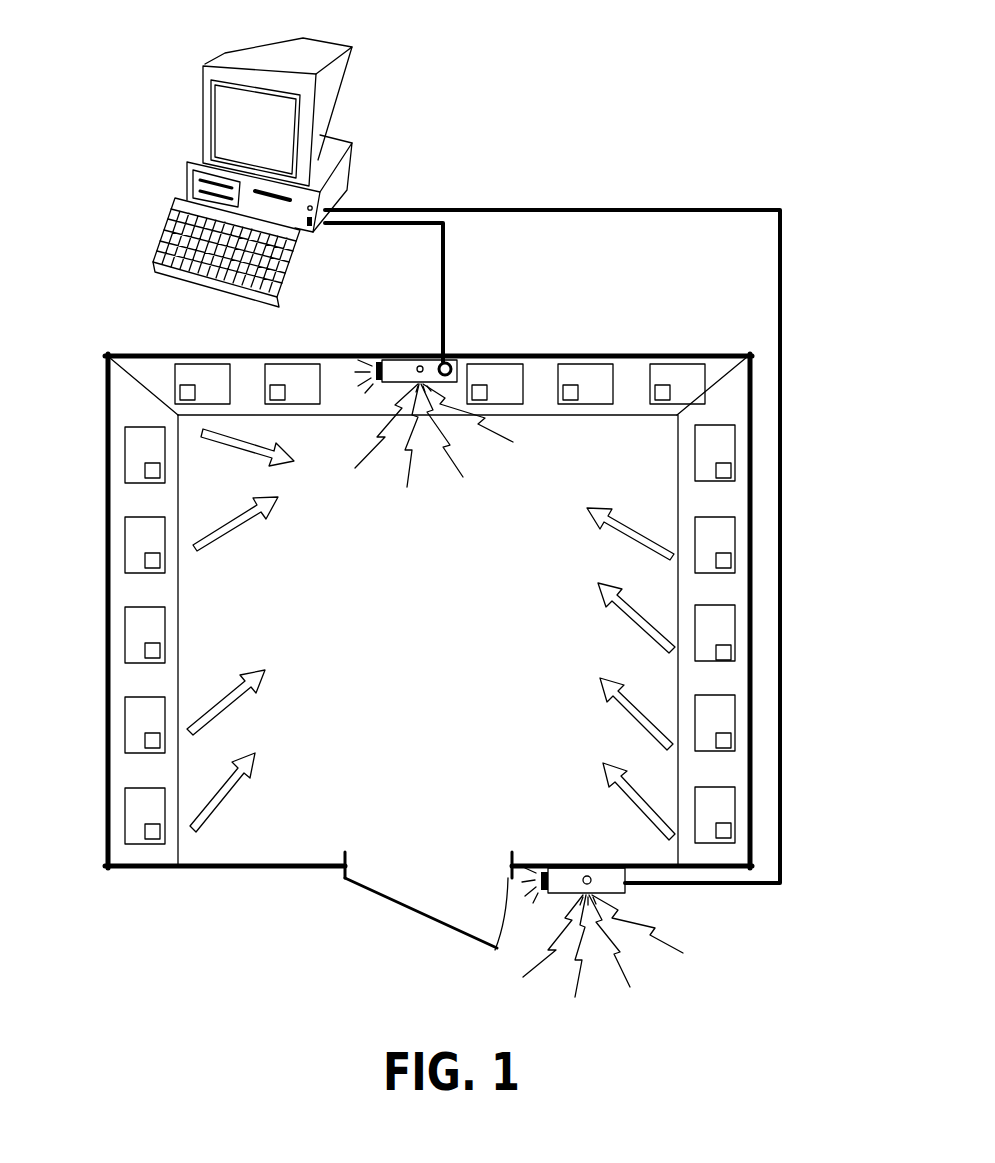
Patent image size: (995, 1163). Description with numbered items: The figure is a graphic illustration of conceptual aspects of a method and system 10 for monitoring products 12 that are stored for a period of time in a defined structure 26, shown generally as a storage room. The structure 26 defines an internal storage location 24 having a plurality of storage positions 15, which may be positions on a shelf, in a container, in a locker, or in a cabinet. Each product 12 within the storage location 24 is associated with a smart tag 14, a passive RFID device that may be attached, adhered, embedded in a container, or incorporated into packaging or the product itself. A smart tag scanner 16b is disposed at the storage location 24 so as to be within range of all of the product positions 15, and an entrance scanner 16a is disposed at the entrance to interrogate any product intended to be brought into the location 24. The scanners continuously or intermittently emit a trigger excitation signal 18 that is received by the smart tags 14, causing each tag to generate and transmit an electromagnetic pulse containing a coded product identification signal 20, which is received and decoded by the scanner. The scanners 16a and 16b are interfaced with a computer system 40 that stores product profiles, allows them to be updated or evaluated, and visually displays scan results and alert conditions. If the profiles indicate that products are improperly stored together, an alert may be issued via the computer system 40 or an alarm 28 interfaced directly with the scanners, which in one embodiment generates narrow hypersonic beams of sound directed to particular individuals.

The method and system 10 is at (492, 198).
The product 12 is at (212, 378).
The smart tag 14 is at (183, 390).
The storage position 15 is at (630, 405).
The entrance scanner 16a is at (563, 868).
The smart tag scanner 16b is at (393, 360).
The trigger signal 18 is at (460, 450).
The product identification signal 20 is at (262, 505).
The storage location 24 is at (437, 797).
The structure 26 is at (147, 870).
The alarm 28 is at (365, 362).
The computer system 40 is at (378, 110).